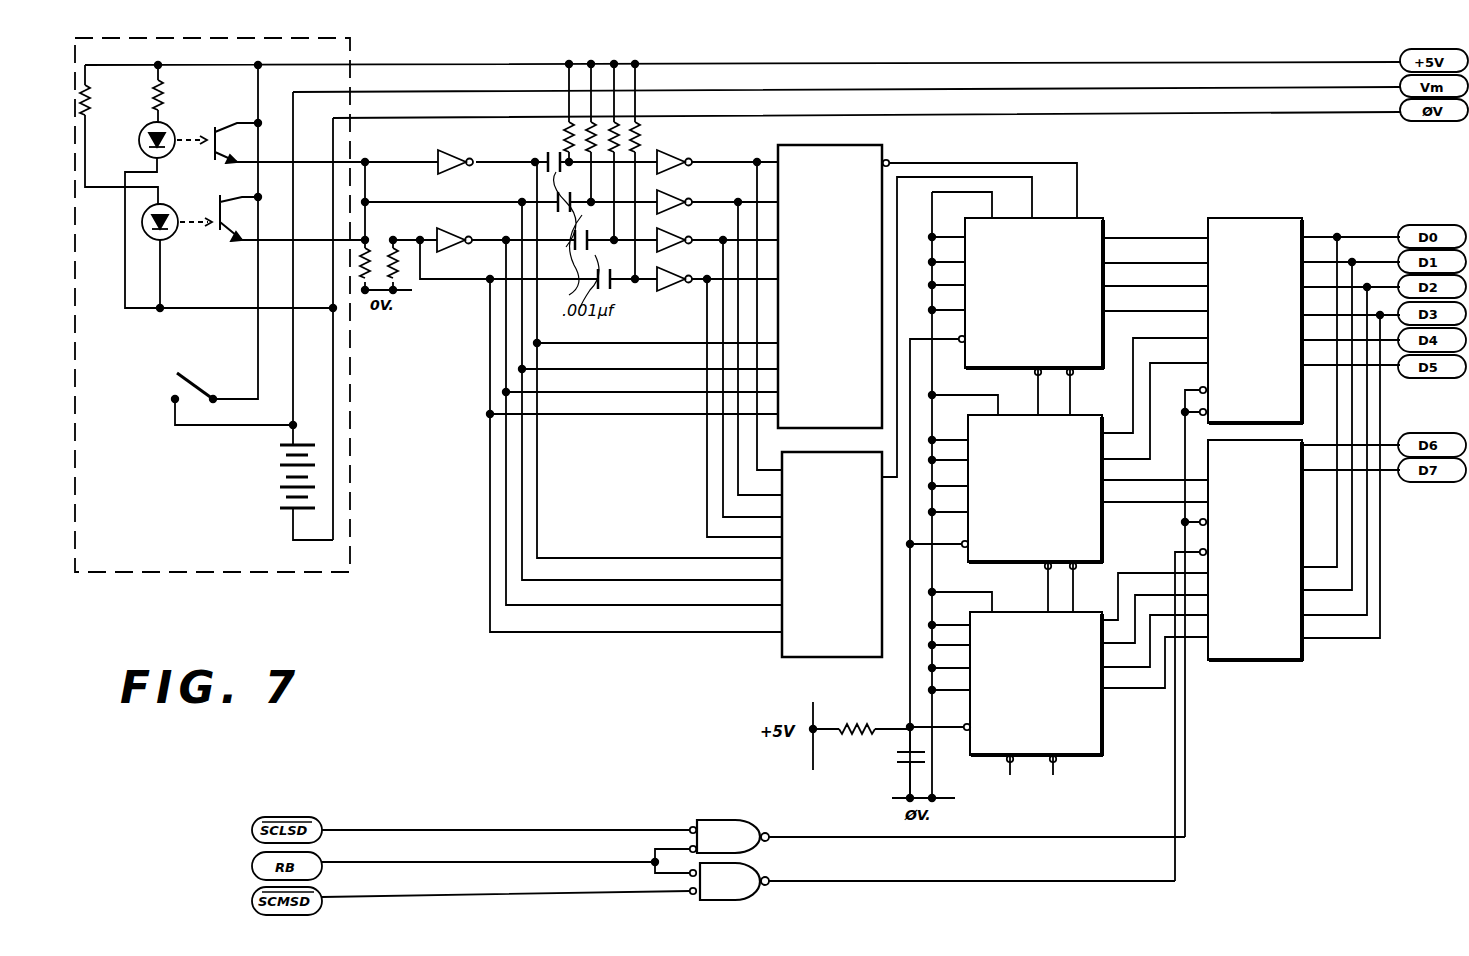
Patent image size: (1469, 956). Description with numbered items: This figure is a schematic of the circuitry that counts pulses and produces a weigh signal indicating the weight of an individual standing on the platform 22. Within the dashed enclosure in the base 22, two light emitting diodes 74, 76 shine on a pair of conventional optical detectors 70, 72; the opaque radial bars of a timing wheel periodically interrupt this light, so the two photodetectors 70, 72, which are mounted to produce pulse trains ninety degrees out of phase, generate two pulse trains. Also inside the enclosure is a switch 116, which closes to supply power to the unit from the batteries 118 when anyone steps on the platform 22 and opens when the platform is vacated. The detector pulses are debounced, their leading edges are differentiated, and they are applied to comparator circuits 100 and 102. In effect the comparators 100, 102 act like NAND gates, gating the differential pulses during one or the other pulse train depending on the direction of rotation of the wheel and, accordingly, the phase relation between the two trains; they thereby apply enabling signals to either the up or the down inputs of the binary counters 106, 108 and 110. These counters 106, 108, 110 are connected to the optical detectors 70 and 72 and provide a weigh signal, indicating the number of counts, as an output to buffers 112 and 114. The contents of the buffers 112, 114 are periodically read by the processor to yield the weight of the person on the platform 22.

The platform 22 is at (262, 560).
The optical detector 70 is at (215, 120).
The optical detector 72 is at (232, 240).
The light emitting diode 74 is at (178, 228).
The light emitting diode 76 is at (140, 128).
The switch 116 is at (178, 393).
The batteries 118 is at (282, 473).
The comparator circuit 100 is at (860, 422).
The comparator circuit 102 is at (830, 645).
The binary counter 106 is at (1055, 346).
The binary counter 108 is at (1052, 542).
The binary counter 110 is at (1053, 742).
The buffer 112 is at (1278, 408).
The buffer 114 is at (1278, 644).